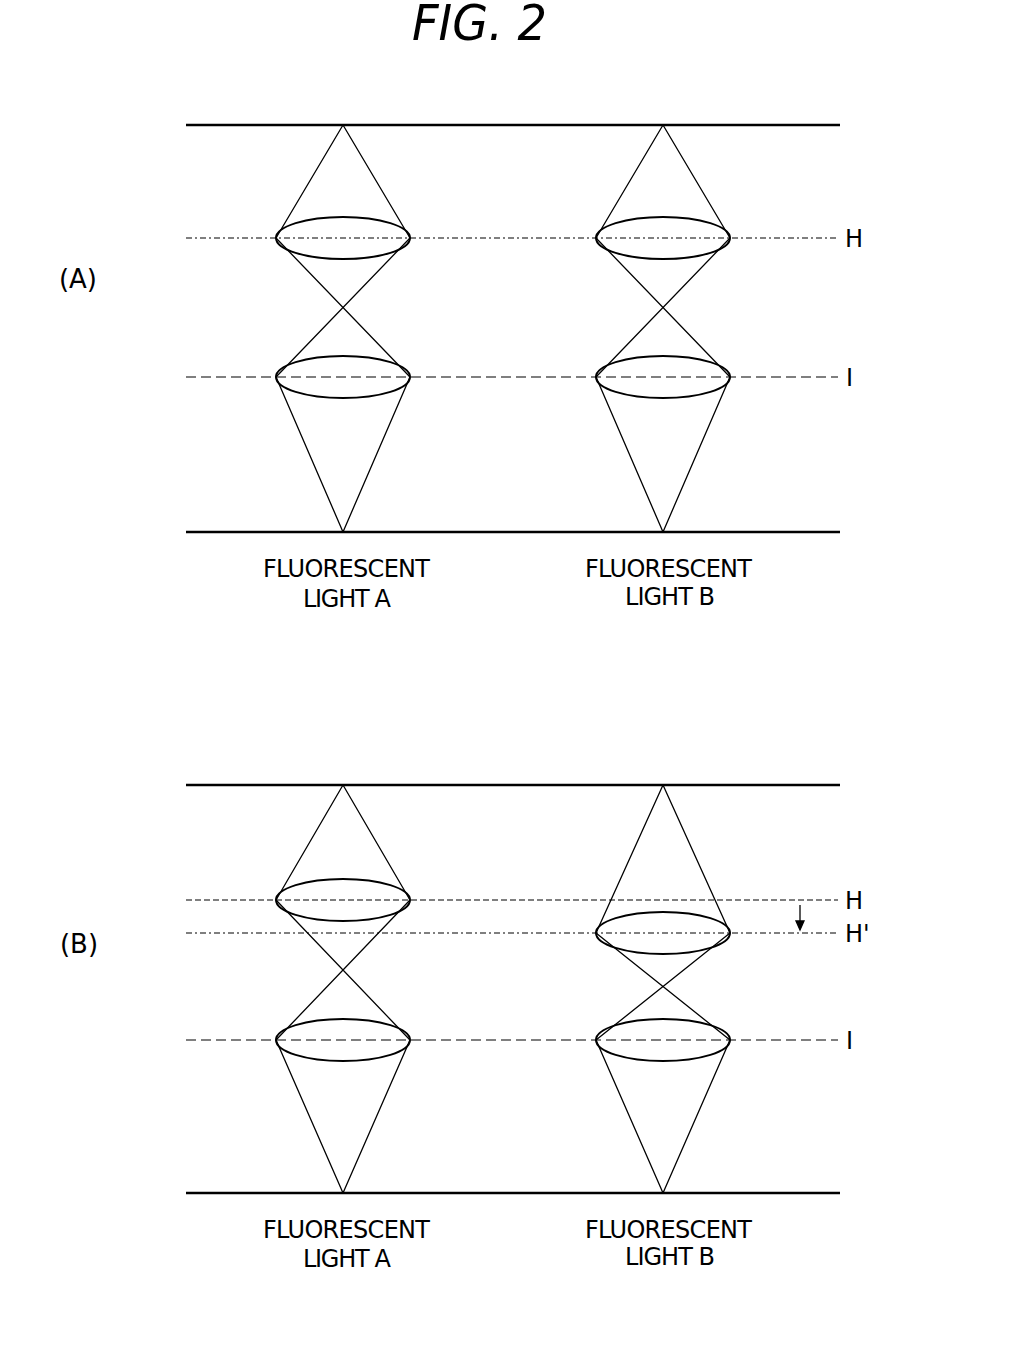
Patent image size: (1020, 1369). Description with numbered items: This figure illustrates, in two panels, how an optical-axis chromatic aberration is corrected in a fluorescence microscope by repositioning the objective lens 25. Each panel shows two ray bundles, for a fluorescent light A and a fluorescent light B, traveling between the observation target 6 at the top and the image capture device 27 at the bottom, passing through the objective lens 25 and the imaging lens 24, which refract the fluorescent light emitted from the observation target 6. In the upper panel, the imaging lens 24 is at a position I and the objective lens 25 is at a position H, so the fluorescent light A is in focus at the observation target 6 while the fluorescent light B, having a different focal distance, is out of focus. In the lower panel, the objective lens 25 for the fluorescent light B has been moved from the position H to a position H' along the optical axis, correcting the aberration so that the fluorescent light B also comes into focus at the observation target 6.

The observation target 6 is at (810, 126).
The imaging lens 24 is at (385, 372).
The objective lens 25 is at (385, 233).
The image capture device 27 is at (810, 531).